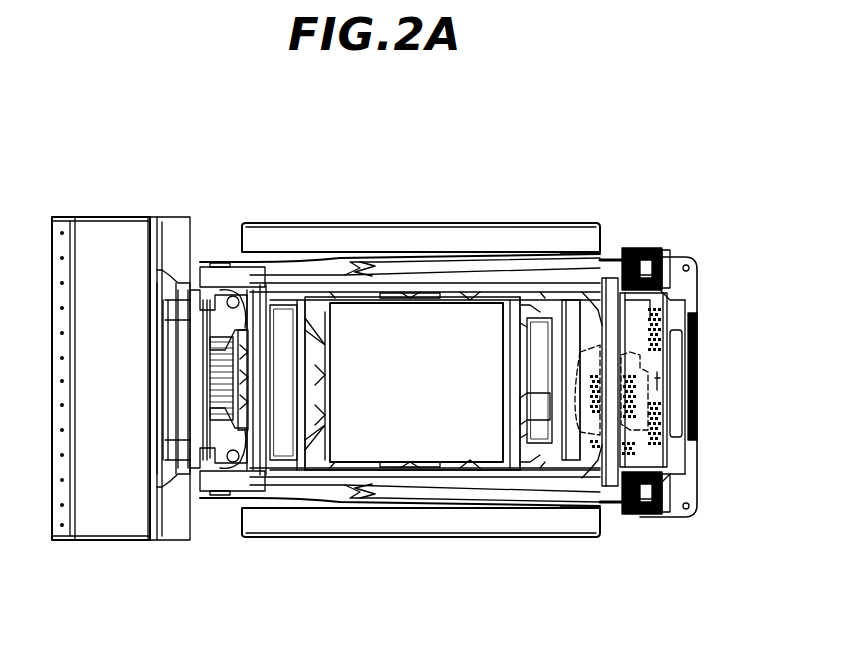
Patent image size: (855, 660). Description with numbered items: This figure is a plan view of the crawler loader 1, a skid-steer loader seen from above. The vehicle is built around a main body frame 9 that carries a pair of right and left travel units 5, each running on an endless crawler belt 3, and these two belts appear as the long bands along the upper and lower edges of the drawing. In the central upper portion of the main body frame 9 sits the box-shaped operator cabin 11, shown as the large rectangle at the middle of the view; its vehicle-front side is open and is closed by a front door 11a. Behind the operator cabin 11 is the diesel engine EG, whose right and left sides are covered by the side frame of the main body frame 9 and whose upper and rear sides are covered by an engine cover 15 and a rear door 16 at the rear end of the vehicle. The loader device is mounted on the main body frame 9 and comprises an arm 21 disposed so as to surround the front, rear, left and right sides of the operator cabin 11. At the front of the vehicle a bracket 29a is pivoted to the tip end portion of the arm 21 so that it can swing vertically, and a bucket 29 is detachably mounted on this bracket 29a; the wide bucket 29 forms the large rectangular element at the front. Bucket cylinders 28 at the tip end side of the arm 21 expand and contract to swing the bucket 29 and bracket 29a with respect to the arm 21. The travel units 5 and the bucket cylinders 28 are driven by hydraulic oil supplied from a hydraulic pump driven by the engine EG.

The crawler loader 1 is at (721, 156).
The endless crawler belt 3 is at (372, 240).
The travel unit 5 is at (533, 222).
The main body frame 9 is at (683, 452).
The operator cabin 11 is at (433, 381).
The front door 11a is at (288, 443).
The engine cover 15 is at (640, 266).
The rear door 16 is at (702, 378).
The arm 21 is at (466, 256).
The bucket cylinder 28 is at (234, 288).
The bucket 29 is at (108, 236).
The bracket 29a is at (181, 468).
The diesel engine EG is at (585, 408).